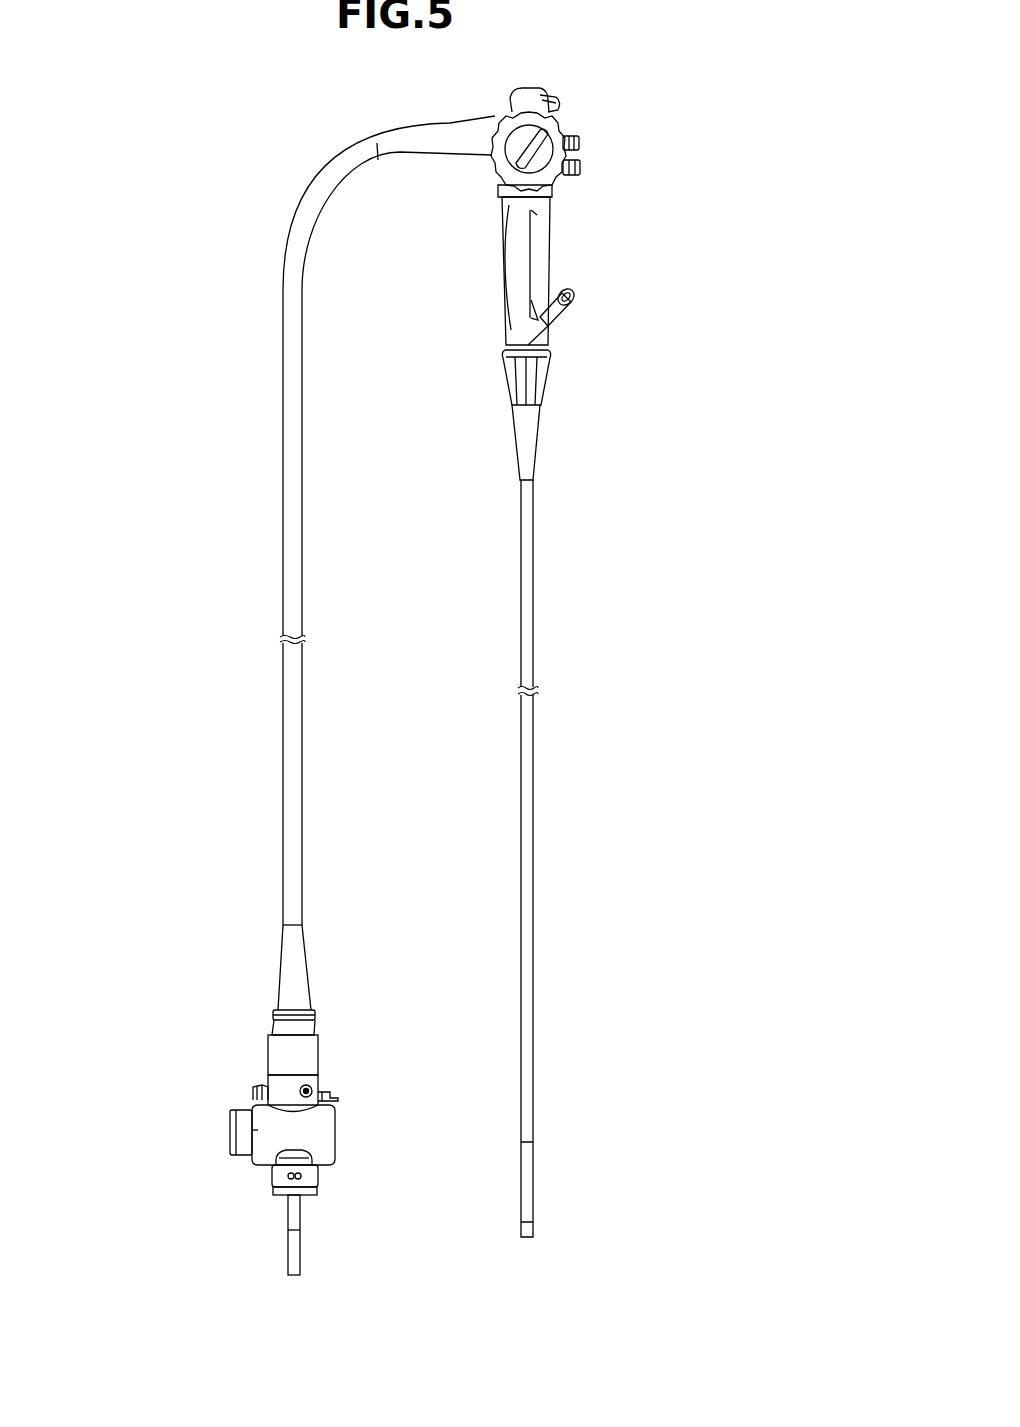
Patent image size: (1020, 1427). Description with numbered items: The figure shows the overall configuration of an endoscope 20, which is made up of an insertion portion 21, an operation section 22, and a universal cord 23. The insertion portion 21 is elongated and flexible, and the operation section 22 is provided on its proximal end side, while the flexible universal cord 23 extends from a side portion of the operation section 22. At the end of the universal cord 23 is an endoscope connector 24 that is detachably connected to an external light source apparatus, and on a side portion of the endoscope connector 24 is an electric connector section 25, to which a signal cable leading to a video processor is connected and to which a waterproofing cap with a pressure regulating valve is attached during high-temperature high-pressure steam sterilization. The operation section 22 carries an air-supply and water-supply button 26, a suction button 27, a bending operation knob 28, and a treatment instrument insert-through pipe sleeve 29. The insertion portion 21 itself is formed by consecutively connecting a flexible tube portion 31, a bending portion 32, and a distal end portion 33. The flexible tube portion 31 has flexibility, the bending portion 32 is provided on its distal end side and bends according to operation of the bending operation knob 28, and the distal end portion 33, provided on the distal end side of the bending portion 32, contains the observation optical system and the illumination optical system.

The endoscope 20 is at (186, 318).
The insertion portion 21 is at (690, 668).
The operation section 22 is at (573, 234).
The universal cord 23 is at (290, 792).
The endoscope connector 24 is at (327, 1130).
The electric connector section 25 is at (223, 1130).
The air-supply and water-supply button 26 is at (580, 165).
The suction button 27 is at (583, 140).
The bending operation knob 28 is at (482, 175).
The treatment instrument insert-through pipe sleeve 29 is at (580, 292).
The flexible tube portion 31 is at (532, 845).
The bending portion 32 is at (532, 1168).
The distal end portion 33 is at (532, 1230).